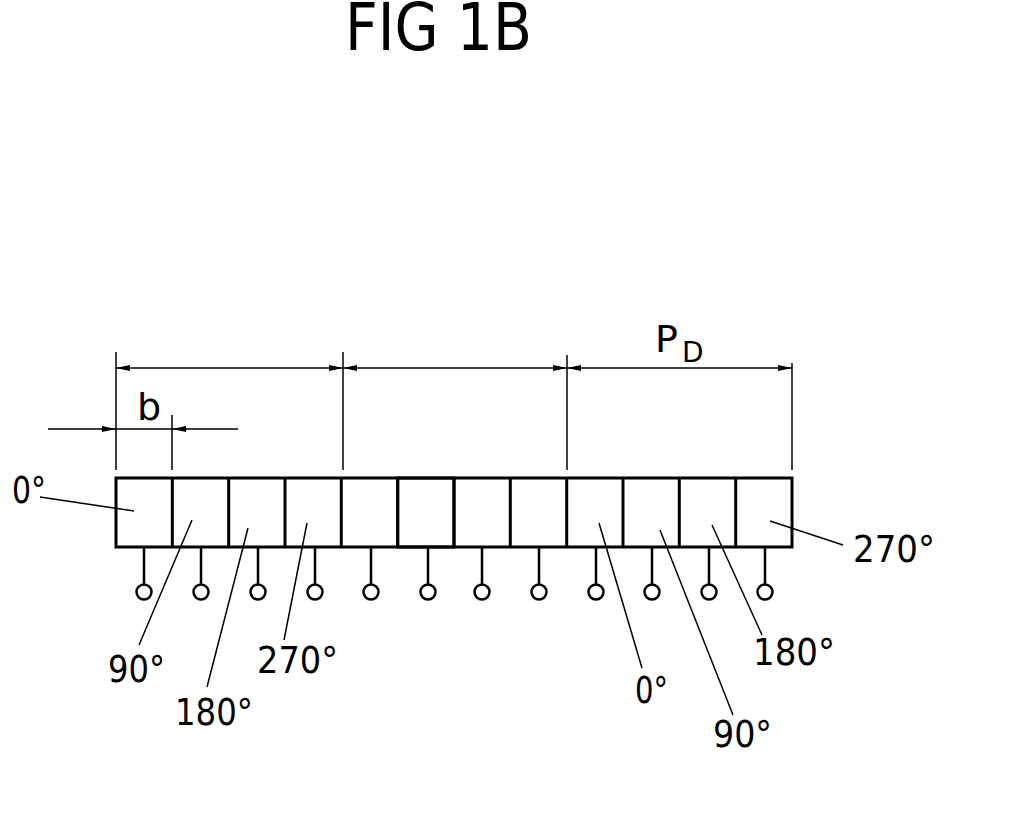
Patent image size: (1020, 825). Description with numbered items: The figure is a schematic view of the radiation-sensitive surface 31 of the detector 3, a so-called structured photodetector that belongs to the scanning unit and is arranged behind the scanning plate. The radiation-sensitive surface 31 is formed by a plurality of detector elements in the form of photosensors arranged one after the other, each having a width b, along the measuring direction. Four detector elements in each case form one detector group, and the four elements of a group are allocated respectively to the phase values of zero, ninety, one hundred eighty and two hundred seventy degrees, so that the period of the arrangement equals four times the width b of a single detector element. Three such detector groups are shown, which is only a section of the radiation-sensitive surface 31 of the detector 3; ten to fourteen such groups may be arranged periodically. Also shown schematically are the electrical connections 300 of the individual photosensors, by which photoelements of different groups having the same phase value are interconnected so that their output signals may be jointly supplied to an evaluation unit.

The detector 3 is at (376, 311).
The radiation-sensitive surface 31 is at (444, 472).
The electrical connections 300 is at (428, 600).